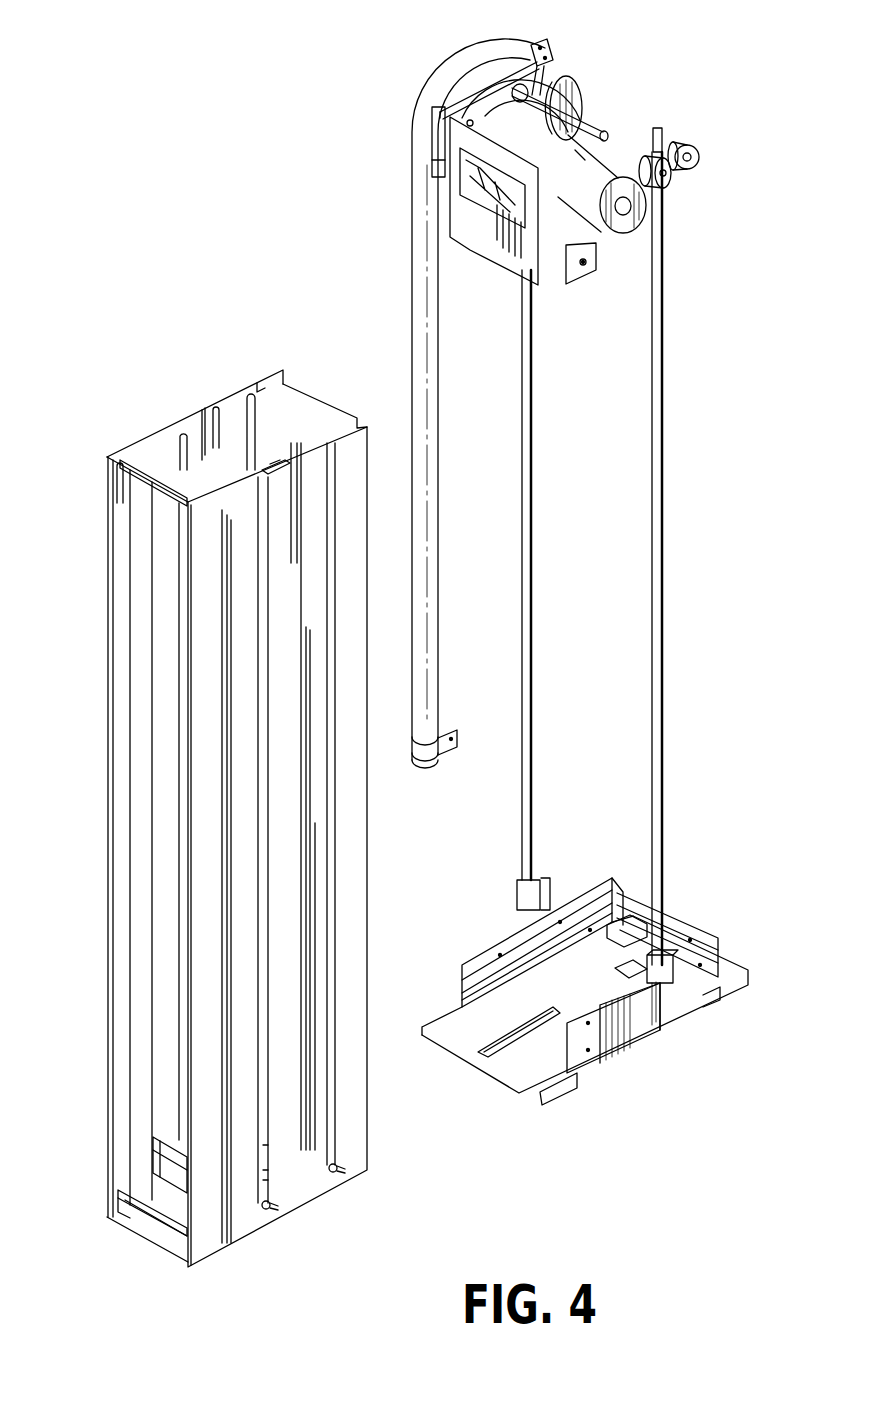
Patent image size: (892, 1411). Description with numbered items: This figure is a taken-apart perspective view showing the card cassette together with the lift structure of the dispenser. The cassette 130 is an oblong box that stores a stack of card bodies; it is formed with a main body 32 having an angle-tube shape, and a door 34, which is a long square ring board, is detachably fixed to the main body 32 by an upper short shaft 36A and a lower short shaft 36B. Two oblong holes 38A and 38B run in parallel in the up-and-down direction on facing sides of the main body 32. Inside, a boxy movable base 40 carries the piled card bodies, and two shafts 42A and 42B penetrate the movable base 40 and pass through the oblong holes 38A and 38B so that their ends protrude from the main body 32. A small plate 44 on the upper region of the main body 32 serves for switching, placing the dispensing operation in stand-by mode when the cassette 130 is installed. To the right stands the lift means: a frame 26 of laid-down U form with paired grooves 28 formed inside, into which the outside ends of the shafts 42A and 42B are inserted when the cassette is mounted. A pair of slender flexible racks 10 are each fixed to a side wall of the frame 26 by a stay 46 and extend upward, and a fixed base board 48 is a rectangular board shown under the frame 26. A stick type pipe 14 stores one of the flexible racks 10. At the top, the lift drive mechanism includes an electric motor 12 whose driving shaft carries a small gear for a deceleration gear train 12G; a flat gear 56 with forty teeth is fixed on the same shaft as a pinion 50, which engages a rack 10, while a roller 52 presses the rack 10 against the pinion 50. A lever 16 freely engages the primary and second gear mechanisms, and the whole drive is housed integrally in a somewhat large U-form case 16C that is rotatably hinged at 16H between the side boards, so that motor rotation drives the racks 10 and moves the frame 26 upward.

The flexible rack 10 is at (534, 656).
The electric motor 12 is at (607, 233).
The deceleration gear train 12G is at (560, 137).
The stick type pipe 14 is at (467, 52).
The lever 16 is at (432, 158).
The U-form case 16C is at (460, 222).
The hinge 16H is at (587, 266).
The frame 26 is at (703, 970).
The groove 28 is at (487, 977).
The main body 32 is at (212, 418).
The door 34 is at (137, 853).
The upper short shaft 36A is at (138, 468).
The lower short shaft 36B is at (128, 1194).
The oblong hole 38A is at (265, 525).
The oblong hole 38B is at (332, 447).
The movable base 40 is at (170, 1168).
The shaft 42A is at (270, 1207).
The shaft 42B is at (335, 1170).
The small plate 44 is at (277, 465).
The stay 46 is at (667, 1007).
The fixed base board 48 is at (587, 997).
The pinion 50 is at (657, 188).
The roller 52 is at (527, 85).
The flat gear 56 is at (583, 100).
The cassette 130 is at (217, 793).